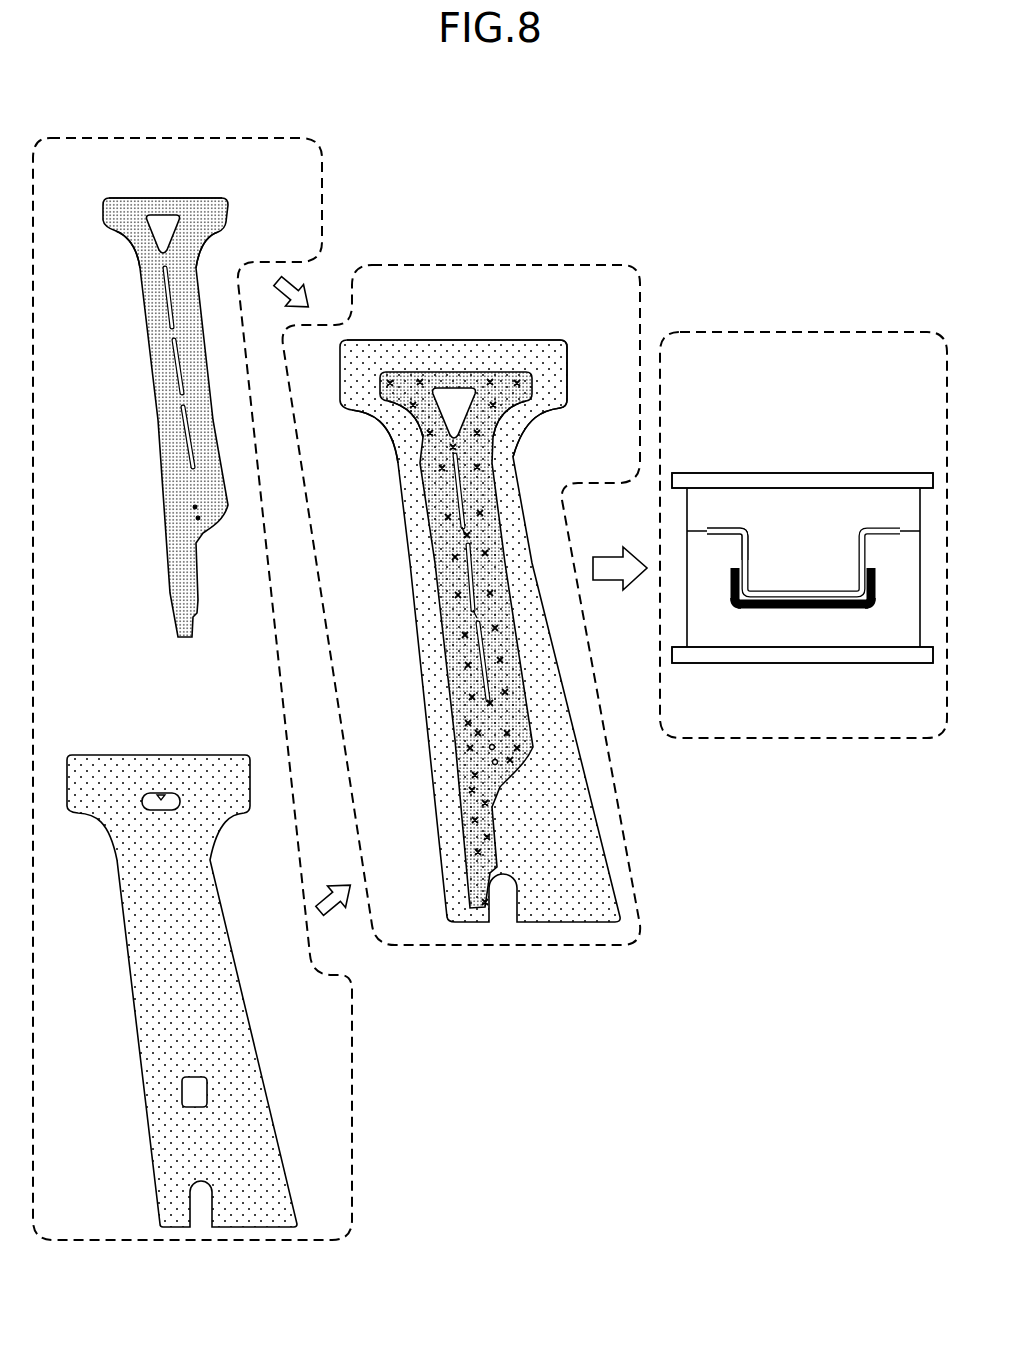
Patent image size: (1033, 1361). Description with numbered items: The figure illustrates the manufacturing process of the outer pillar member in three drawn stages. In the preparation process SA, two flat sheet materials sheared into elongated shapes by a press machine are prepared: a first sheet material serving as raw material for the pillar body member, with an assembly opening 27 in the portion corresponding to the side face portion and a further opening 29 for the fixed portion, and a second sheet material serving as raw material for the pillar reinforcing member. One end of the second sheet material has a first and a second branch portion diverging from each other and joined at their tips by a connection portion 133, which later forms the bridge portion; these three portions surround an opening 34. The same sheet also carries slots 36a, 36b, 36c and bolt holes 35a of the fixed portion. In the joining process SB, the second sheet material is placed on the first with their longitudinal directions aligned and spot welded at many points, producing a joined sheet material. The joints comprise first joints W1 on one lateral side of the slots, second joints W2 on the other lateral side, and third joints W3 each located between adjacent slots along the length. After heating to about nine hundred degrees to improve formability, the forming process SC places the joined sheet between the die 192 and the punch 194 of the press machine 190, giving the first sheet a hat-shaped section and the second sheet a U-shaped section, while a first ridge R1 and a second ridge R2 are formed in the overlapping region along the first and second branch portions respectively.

The preparation process SA is at (165, 138).
The joining process SB is at (485, 265).
The forming process SC is at (792, 332).
The connection portion 133 is at (168, 199).
The opening 34 is at (160, 248).
The bolt holes 35a is at (197, 518).
The slot 36a is at (166, 293).
The slot 36b is at (178, 367).
The slot 36c is at (183, 433).
The assembly opening 27 is at (160, 795).
The square hole of base plate 29 is at (182, 1095).
The first joints W1 is at (513, 403).
The second joints W2 is at (390, 405).
The third joints W3 is at (464, 536).
The press machine 190 is at (898, 408).
The die 192 is at (836, 633).
The punch 194 is at (837, 510).
The first ridge R1 is at (870, 606).
The second ridge R2 is at (733, 600).